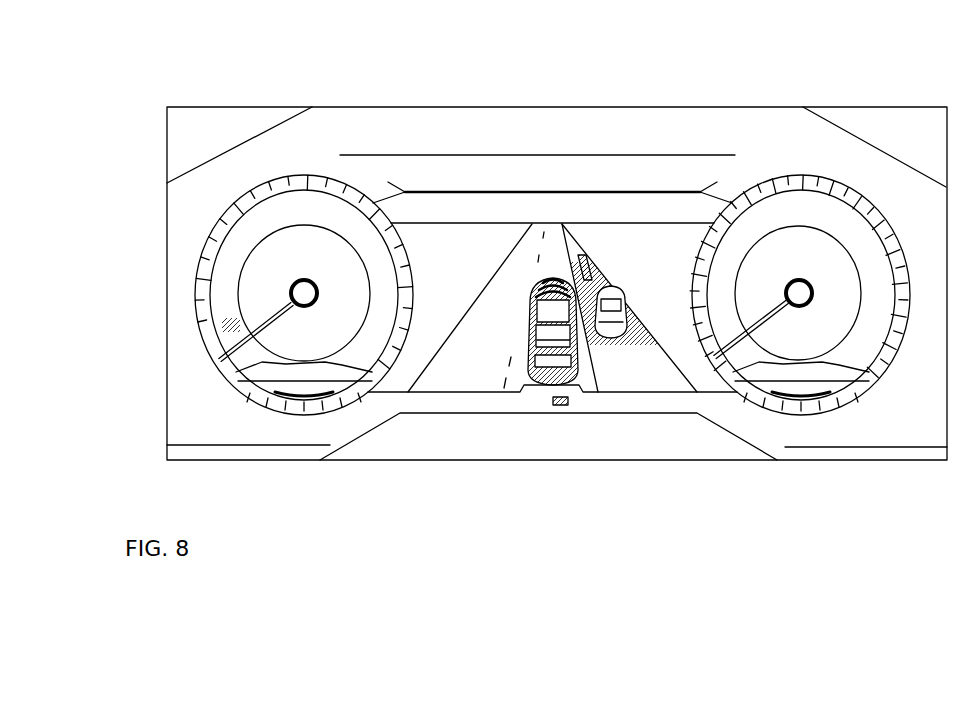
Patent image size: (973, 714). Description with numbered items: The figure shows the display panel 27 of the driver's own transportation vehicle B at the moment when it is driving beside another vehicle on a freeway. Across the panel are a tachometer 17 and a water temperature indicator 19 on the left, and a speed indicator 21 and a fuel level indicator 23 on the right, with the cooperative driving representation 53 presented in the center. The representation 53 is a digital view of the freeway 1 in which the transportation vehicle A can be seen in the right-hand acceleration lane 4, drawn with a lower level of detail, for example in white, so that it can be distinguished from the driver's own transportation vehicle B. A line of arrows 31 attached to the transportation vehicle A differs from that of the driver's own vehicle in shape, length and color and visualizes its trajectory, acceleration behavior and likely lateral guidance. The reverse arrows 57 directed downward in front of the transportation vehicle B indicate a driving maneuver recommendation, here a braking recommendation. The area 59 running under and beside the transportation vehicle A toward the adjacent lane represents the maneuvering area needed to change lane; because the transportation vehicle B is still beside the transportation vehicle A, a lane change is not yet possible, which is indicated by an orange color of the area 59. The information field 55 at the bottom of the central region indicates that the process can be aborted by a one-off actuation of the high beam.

The representation 53 is at (573, 95).
The display panel 27 is at (900, 118).
The tachometer 17 is at (273, 372).
The water temperature indicator 19 is at (312, 403).
The information field 55 is at (538, 412).
The speed indicator 21 is at (775, 338).
The fuel level indicator 23 is at (812, 405).
The freeway 1 is at (552, 263).
The acceleration lane 4 is at (573, 245).
The area 59 is at (638, 337).
The line of arrows 31 is at (583, 263).
The reverse arrows 57 is at (530, 288).
The transportation vehicle A is at (610, 300).
The transportation vehicle B is at (550, 318).